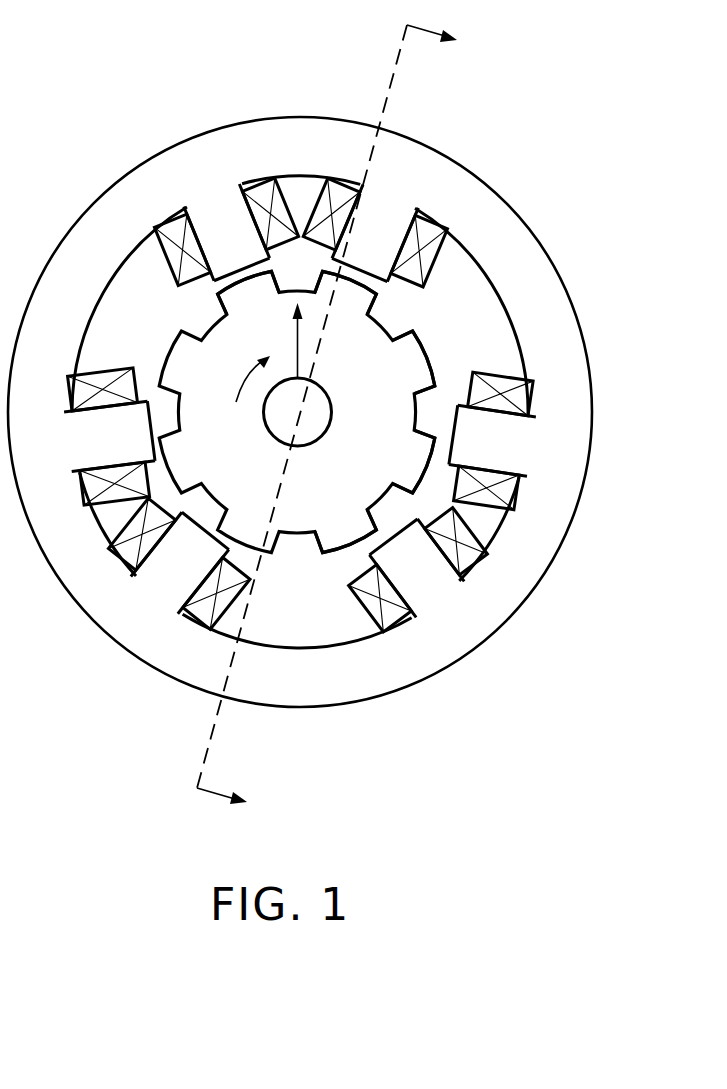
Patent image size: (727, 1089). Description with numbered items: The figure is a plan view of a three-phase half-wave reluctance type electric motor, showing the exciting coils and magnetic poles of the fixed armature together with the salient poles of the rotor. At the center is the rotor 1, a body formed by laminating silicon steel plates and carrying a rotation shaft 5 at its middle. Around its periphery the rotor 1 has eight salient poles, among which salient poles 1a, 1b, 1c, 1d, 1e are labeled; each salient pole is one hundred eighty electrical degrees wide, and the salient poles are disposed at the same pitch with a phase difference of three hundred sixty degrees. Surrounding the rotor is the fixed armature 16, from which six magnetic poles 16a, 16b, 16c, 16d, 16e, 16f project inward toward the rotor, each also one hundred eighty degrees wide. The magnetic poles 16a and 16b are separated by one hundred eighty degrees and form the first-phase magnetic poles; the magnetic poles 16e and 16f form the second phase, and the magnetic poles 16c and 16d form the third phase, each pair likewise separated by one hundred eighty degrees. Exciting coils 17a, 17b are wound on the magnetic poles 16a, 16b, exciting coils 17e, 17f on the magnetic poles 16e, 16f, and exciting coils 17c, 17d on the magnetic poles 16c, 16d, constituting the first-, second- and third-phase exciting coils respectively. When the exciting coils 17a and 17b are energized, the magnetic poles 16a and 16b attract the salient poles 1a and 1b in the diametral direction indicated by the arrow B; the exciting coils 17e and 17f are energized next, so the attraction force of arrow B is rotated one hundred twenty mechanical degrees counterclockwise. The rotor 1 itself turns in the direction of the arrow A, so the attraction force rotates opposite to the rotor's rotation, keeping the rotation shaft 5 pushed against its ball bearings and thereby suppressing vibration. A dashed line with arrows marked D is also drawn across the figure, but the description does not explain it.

The rotor 1 is at (299, 522).
The salient pole 1a is at (238, 285).
The salient pole 1b is at (347, 285).
The salient pole 1c is at (427, 353).
The salient pole 1d is at (430, 463).
The salient pole 1e is at (357, 547).
The rotation shaft 5 is at (331, 412).
The fixed armature 16 is at (532, 251).
The magnetic pole 16a is at (233, 268).
The magnetic pole 16b is at (360, 262).
The magnetic pole 16c is at (452, 434).
The magnetic pole 16d is at (402, 530).
The magnetic pole 16e is at (197, 527).
The magnetic pole 16f is at (147, 427).
The exciting coil 17a is at (277, 203).
The exciting coil 17b is at (420, 262).
The exciting coil 17c is at (500, 490).
The exciting coil 17d is at (358, 615).
The exciting coil 17e is at (135, 550).
The exciting coil 17f is at (78, 390).
The arrow A is at (248, 374).
The arrow B is at (302, 358).
The detection direction D is at (384, 97).